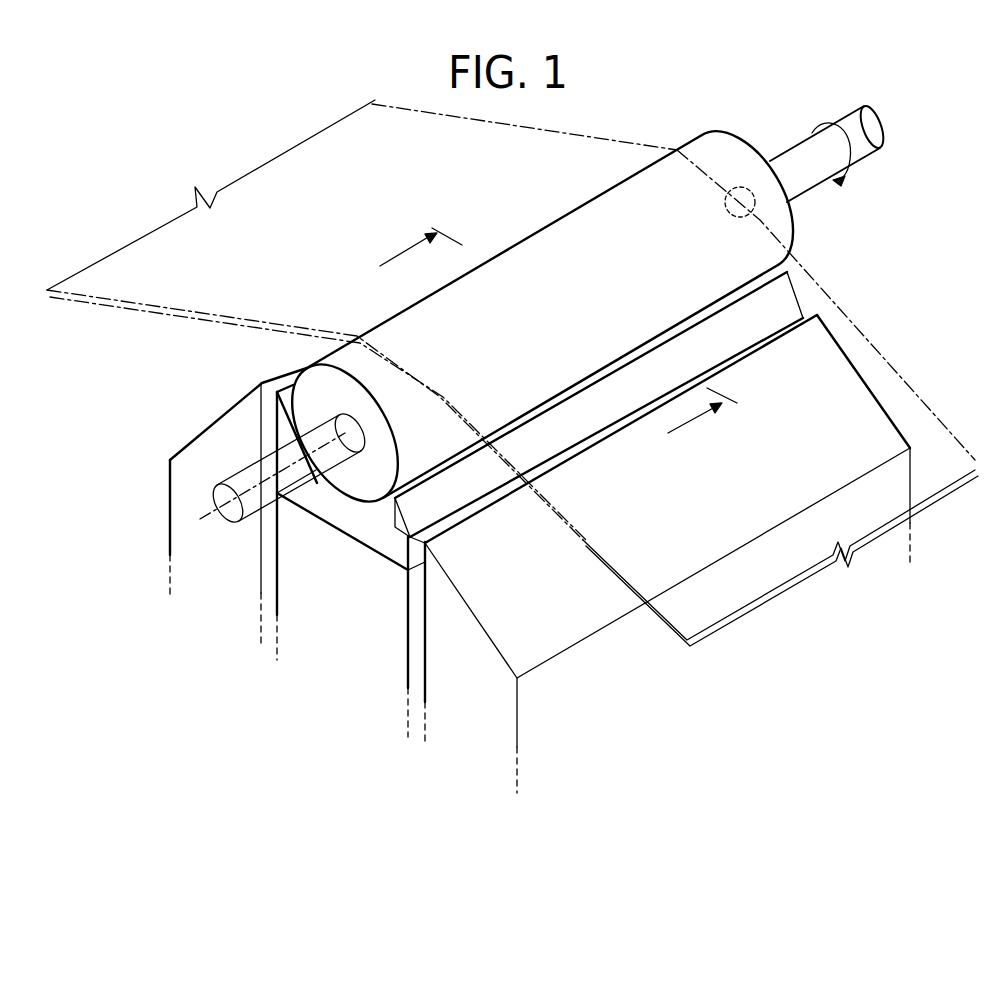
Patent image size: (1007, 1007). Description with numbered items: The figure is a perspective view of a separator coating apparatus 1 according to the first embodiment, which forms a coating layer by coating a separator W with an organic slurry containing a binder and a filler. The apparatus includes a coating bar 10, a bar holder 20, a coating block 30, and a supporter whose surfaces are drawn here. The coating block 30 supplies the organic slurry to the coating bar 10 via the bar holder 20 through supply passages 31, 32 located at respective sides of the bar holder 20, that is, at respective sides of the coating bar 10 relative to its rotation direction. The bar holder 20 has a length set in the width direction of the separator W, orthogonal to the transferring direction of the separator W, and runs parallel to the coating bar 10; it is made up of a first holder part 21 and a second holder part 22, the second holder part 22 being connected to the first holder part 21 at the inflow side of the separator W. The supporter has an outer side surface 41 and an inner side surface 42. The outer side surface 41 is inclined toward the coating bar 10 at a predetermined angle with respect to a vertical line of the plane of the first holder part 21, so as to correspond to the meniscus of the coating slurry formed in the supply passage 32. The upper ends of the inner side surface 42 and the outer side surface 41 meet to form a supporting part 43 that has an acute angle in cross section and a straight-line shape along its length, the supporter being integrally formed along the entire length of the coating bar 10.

The separator coating apparatus 1 is at (635, 112).
The coating bar 10 is at (739, 134).
The bar holder 20 is at (350, 536).
The first holder part 21 is at (350, 513).
The second holder part 22 is at (273, 427).
The coating block 30 is at (163, 496).
The supply passage 31 is at (268, 592).
The supply passage 32 is at (418, 666).
The outer side surface 41 is at (435, 490).
The inner side surface 42 is at (392, 513).
The supporting part 43 is at (502, 423).
The separator W is at (890, 347).